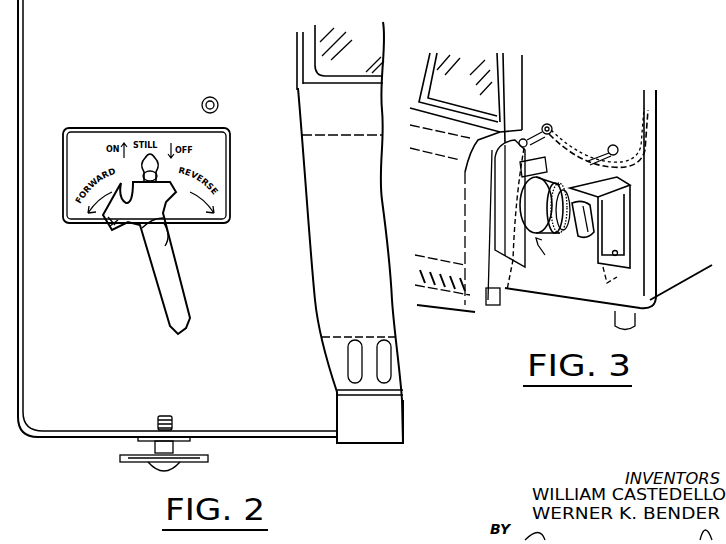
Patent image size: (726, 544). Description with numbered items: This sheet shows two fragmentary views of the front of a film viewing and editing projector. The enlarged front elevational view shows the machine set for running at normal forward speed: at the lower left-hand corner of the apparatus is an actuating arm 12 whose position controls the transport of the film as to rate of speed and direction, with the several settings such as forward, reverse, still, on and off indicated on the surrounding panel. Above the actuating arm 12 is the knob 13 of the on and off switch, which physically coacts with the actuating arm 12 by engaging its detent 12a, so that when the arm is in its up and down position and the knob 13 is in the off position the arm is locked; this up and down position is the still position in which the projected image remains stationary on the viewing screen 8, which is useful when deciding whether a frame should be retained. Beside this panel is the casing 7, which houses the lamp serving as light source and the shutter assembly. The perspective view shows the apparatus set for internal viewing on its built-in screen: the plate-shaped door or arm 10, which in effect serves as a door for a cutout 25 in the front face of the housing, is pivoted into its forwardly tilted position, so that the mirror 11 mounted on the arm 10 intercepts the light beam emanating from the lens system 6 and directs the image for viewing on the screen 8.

In FIG. 3, the lens system 6 is at (543, 248).
In FIG. 2, the casing 7 is at (333, 307).
In FIG. 3, the casing 7 is at (444, 252).
In FIG. 2, the viewing screen 8 is at (335, 57).
In FIG. 3, the arm 10 is at (605, 204).
In FIG. 3, the mirror 11 is at (587, 237).
In FIG. 2, the actuating arm 12 is at (170, 290).
In FIG. 2, the detent 12a is at (125, 206).
In FIG. 2, the knob 13 is at (152, 166).
In FIG. 3, the cutout 25 is at (625, 243).